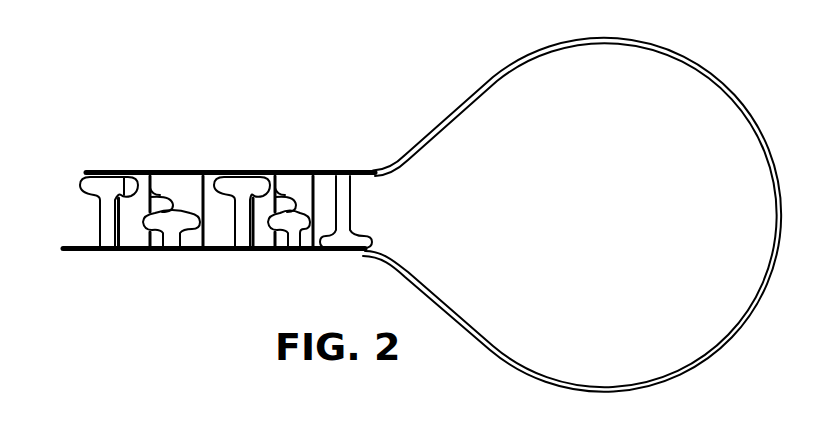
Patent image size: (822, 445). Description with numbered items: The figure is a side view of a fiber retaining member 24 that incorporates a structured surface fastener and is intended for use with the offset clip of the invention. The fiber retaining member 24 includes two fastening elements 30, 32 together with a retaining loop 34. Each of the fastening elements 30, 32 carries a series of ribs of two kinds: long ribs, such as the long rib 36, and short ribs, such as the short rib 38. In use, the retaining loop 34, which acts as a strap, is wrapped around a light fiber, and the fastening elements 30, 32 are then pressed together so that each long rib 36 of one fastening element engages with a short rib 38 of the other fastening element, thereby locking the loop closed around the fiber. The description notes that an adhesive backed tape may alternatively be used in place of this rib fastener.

The fiber retaining member 24 is at (240, 206).
The fastening element 30 is at (307, 171).
The fastening element 32 is at (288, 251).
The retaining loop 34 is at (607, 38).
The long rib 36 is at (342, 220).
The short rib 38 is at (287, 222).